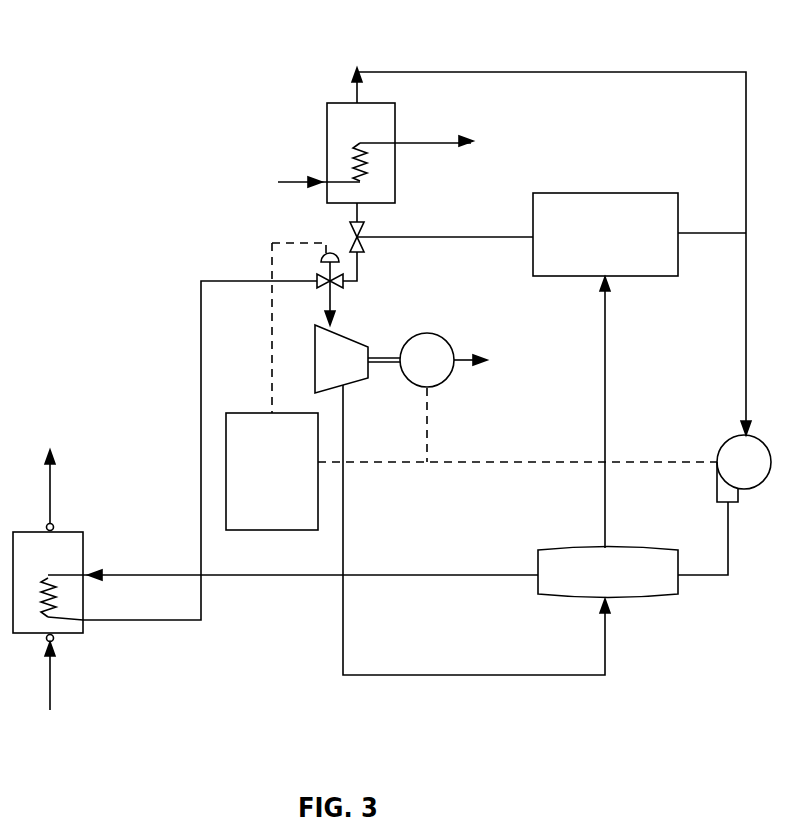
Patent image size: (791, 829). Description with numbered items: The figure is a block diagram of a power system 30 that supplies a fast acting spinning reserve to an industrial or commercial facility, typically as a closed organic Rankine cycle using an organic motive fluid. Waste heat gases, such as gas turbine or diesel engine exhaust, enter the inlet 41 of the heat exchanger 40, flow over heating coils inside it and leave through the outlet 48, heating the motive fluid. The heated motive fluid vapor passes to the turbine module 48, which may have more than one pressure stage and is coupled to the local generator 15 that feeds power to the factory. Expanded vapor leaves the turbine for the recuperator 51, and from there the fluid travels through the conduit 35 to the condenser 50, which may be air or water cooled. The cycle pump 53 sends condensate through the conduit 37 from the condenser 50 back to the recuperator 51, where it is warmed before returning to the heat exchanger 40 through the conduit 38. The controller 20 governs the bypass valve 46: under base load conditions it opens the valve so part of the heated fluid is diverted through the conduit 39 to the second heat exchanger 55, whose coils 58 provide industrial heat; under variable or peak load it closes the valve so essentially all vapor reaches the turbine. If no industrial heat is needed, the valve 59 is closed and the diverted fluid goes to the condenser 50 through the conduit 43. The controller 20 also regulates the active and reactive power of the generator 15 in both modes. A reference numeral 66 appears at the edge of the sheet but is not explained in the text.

The power system 30 is at (105, 35).
The second heat exchanger 55 is at (327, 117).
The coils 58 is at (363, 150).
The valve 59 is at (353, 221).
The conduit 43 is at (442, 237).
The condenser 50 is at (660, 180).
The conduit 35 is at (607, 330).
The cycle pump 53 is at (738, 436).
The conduit 37 is at (728, 528).
The recuperator 51 is at (653, 551).
The conduit 38 is at (432, 575).
The heat exchanger 40 is at (70, 532).
The turbine module 48 is at (348, 333).
The inlet 41 is at (54, 637).
The bypass valve 46 is at (316, 289).
The conduit 39 is at (357, 264).
The local generator 15 is at (440, 322).
The controller 20 is at (318, 403).
The reference numeral (partially visible) 66 is at (605, 824).